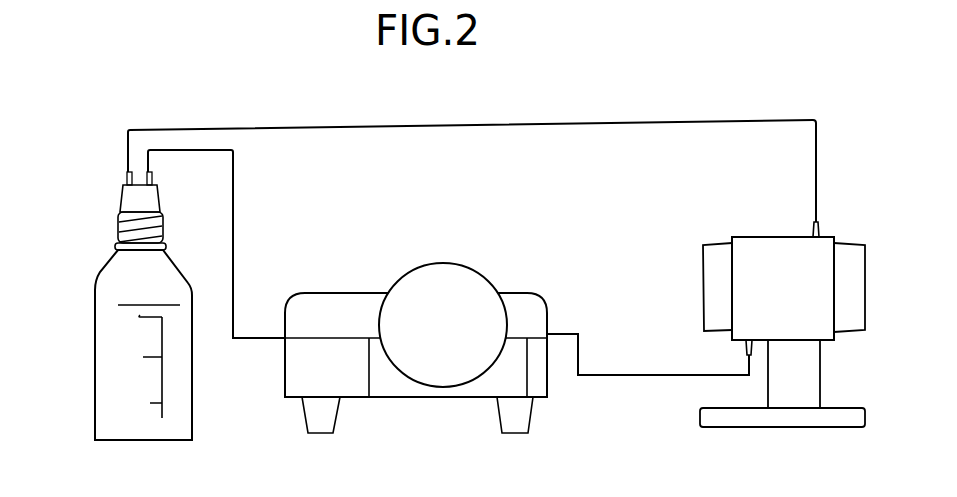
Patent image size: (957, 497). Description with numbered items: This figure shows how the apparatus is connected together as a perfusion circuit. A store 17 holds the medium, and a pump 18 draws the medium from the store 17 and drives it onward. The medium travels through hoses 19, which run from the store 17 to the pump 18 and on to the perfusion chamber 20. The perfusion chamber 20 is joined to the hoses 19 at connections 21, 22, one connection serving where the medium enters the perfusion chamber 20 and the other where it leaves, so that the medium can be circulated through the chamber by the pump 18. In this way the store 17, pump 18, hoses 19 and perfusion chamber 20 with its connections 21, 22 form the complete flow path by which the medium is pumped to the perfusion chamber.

The store 17 is at (155, 440).
The pump 18 is at (478, 278).
The hoses 19 is at (640, 375).
The perfusion chamber 20 is at (866, 292).
The connection 21 is at (822, 227).
The connection 22 is at (742, 347).